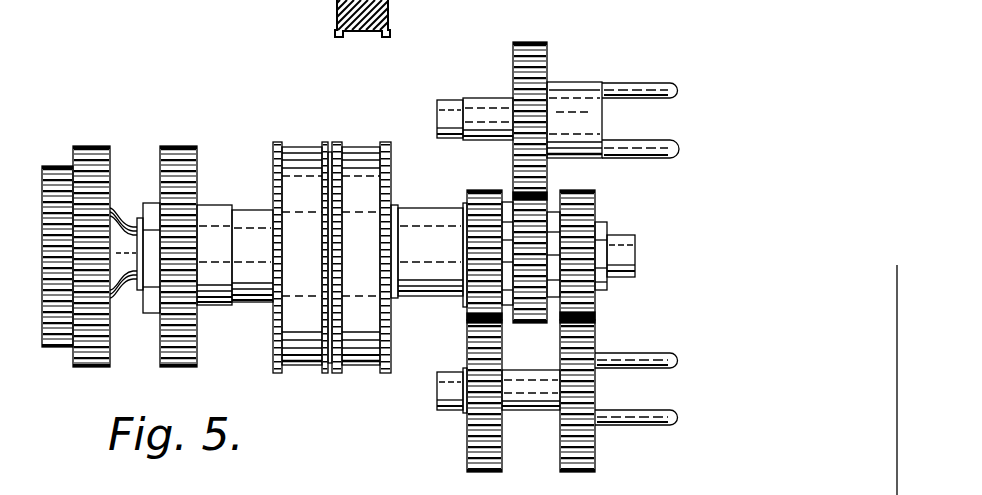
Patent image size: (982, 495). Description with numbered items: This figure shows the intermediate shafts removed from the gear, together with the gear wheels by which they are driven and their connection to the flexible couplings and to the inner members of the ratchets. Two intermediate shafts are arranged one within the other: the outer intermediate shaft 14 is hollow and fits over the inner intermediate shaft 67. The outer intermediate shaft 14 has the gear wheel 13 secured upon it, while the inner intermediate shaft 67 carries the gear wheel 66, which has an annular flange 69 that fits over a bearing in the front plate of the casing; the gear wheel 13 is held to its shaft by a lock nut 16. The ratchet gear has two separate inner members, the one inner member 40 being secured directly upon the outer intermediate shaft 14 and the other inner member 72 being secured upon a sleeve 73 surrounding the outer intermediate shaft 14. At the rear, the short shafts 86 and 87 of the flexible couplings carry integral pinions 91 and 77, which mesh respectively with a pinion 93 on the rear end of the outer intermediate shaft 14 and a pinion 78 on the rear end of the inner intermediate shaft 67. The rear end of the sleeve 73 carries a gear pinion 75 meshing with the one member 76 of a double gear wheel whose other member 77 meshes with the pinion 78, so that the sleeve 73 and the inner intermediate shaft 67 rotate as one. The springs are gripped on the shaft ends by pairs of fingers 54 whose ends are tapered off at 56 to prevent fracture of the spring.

The gear wheel 13 is at (194, 146).
The outer intermediate shaft 14 is at (252, 218).
The lock nut 16 is at (152, 202).
The inner member 40 is at (300, 150).
The fingers 54 is at (657, 83).
The tapered ends 56 is at (670, 428).
The gear wheel 66 is at (97, 147).
The inner intermediate shaft 67 is at (637, 254).
The annular flange 69 is at (52, 166).
The inner member 72 is at (362, 147).
The sleeve 73 is at (425, 287).
The gear pinion 75 is at (467, 240).
The member of double gear wheel 76 is at (467, 450).
The pinion 77 is at (597, 453).
The pinion 78 is at (595, 200).
The short shaft 86 is at (478, 98).
The short shaft 87 is at (530, 410).
The pinion 91 is at (533, 42).
The pinion 93 is at (537, 314).